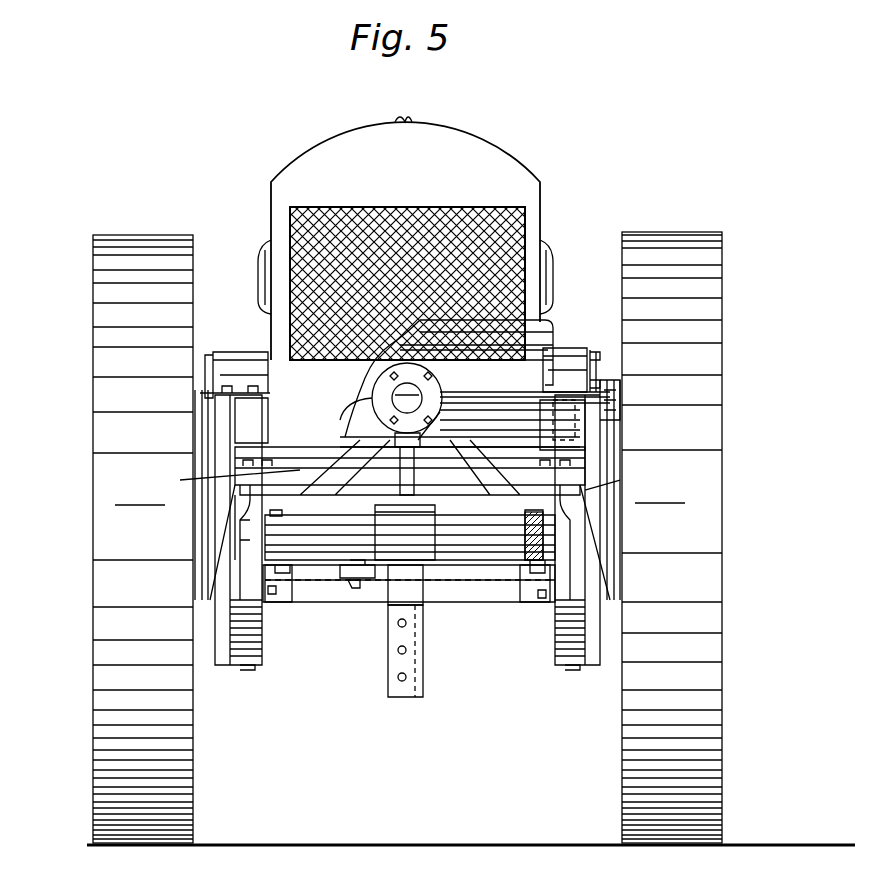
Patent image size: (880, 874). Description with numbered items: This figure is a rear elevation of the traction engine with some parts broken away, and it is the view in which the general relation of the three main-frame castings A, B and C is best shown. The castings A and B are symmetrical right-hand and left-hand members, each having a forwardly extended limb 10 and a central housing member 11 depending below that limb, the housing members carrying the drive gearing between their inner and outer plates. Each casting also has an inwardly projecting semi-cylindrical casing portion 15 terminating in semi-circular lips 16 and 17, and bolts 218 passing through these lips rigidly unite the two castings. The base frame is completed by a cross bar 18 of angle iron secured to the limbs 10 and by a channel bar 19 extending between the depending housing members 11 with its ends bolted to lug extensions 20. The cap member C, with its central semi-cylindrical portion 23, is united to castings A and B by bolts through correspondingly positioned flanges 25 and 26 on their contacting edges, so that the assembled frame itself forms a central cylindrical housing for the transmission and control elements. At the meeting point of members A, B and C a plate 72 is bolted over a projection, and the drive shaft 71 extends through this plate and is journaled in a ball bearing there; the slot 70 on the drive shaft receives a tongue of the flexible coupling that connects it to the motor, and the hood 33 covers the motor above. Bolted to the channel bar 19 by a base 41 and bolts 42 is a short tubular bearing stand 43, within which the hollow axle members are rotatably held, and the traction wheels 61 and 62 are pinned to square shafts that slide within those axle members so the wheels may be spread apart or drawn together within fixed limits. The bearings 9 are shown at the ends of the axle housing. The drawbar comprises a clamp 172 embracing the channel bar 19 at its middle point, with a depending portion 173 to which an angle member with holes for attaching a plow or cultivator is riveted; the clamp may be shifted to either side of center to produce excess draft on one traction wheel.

The hood 33 is at (330, 140).
The central semi-cylindrical portion 23 is at (455, 335).
The cap member C is at (540, 330).
The plate 72 is at (400, 380).
The drive shaft 71 is at (395, 392).
The slot 70 is at (380, 403).
The semi-circular lip 17 is at (400, 433).
The semi-circular lip 16 is at (440, 432).
The flange 25 is at (612, 400).
The flange 26 is at (598, 408).
The forwardly extended limb 10 is at (570, 425).
The semi-cylindrical casing portion 15 is at (360, 460).
The bolts 218 is at (420, 445).
The casting A is at (590, 478).
The casting B is at (235, 525).
The tubular bearing stand 43 is at (420, 510).
The bearing 9 is at (283, 510).
The cross bar 18 is at (335, 480).
The channel bar 19 is at (330, 603).
The lug extensions 20 is at (287, 603).
The base 41 is at (372, 580).
The bolts 42 is at (358, 590).
The clamp 172 is at (418, 585).
The depending portion 173 is at (398, 666).
The central housing member 11 is at (245, 650).
The traction wheel 61 is at (712, 699).
The traction wheel 62 is at (110, 721).